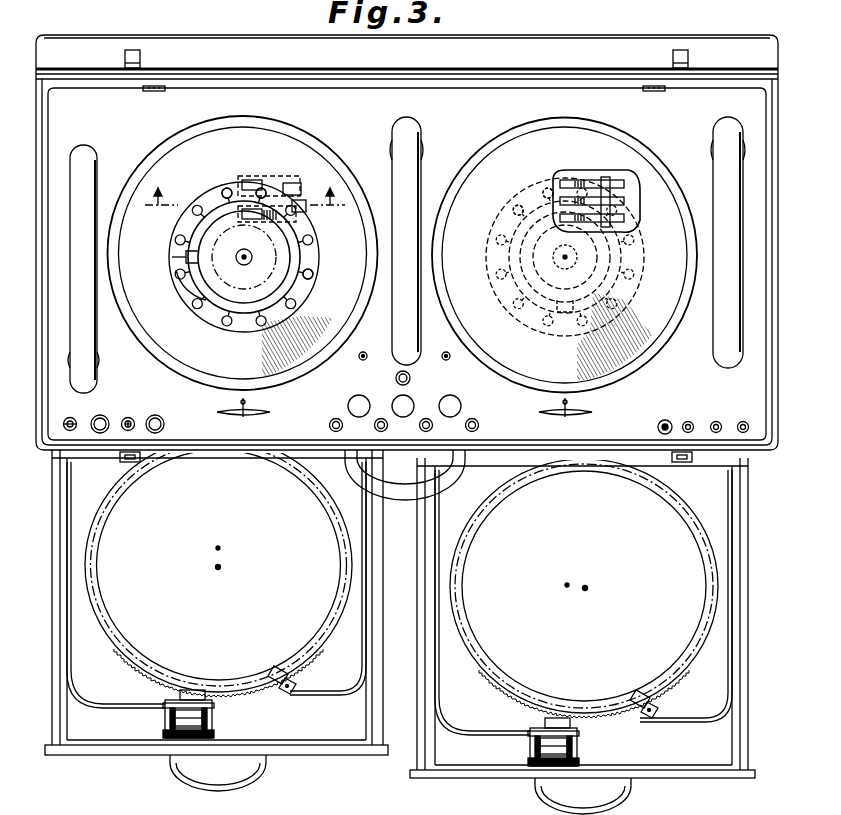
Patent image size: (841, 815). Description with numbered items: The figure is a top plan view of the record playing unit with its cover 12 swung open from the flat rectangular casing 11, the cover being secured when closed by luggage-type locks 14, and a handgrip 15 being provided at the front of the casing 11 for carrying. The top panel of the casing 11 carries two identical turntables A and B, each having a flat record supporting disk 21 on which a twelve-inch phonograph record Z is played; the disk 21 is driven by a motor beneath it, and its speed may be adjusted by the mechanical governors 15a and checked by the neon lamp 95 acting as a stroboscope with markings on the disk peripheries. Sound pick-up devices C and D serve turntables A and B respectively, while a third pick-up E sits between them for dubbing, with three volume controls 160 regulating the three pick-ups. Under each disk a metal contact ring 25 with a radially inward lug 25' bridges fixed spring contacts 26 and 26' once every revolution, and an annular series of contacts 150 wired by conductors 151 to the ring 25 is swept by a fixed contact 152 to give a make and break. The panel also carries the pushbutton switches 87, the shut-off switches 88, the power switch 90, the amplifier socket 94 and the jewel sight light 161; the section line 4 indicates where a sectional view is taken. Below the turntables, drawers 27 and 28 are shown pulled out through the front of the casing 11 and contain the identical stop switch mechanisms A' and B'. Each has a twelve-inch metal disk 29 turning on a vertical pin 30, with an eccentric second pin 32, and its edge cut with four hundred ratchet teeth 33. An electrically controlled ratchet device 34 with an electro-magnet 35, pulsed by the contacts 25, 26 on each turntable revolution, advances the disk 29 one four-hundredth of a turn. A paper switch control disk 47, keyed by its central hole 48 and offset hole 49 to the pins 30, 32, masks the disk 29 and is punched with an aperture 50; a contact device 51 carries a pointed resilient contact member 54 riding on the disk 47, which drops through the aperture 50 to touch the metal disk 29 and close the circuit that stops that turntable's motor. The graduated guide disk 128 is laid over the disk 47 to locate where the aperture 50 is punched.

The casing 11 is at (37, 447).
The cover 12 is at (568, 38).
The locks 14 is at (122, 462).
The handgrip 15 is at (410, 486).
The mechanical governors 15a is at (238, 405).
The record supporting disk 21 is at (343, 180).
The contact ring 25 is at (234, 257).
The contact lug 25' is at (159, 257).
The spring contact member 26 is at (454, 179).
The spring contact member 26' is at (420, 242).
The drawer 27 is at (82, 758).
The drawer 28 is at (494, 779).
The metal disk 29 is at (112, 652).
The vertical pin 30 is at (220, 567).
The second pin 32 is at (220, 548).
The ratchet teeth 33 is at (250, 694).
The ratchet device 34 is at (165, 728).
The electro-magnet 35 is at (203, 726).
The switch control disk 47 is at (98, 582).
The central hole 48 is at (218, 569).
The offset hole 49 is at (218, 546).
The aperture 50 is at (330, 618).
The contact device 51 is at (297, 685).
The contact member 54 is at (272, 674).
The pushbutton switches 87 is at (381, 418).
The shut-off push button switches 88 is at (330, 426).
The switch 90 is at (68, 418).
The socket 94 is at (718, 420).
The neon lamp 95 is at (408, 372).
The guide disk 128 is at (98, 544).
The contacts 150 is at (252, 186).
The conductors 151 is at (223, 195).
The fixed contact 152 is at (288, 178).
The volume controls 160 is at (348, 405).
The jewel sight light 161 is at (155, 415).
The section line 4 is at (245, 214).
The turntable A is at (243, 248).
The turntable B is at (564, 249).
The sound pick-up device C is at (86, 160).
The sound pick-up device D is at (722, 335).
The sound pick-up device E is at (414, 185).
The phonograph record Z is at (180, 352).
The stop switch mechanism A' is at (71, 687).
The stop switch mechanism B' is at (737, 665).